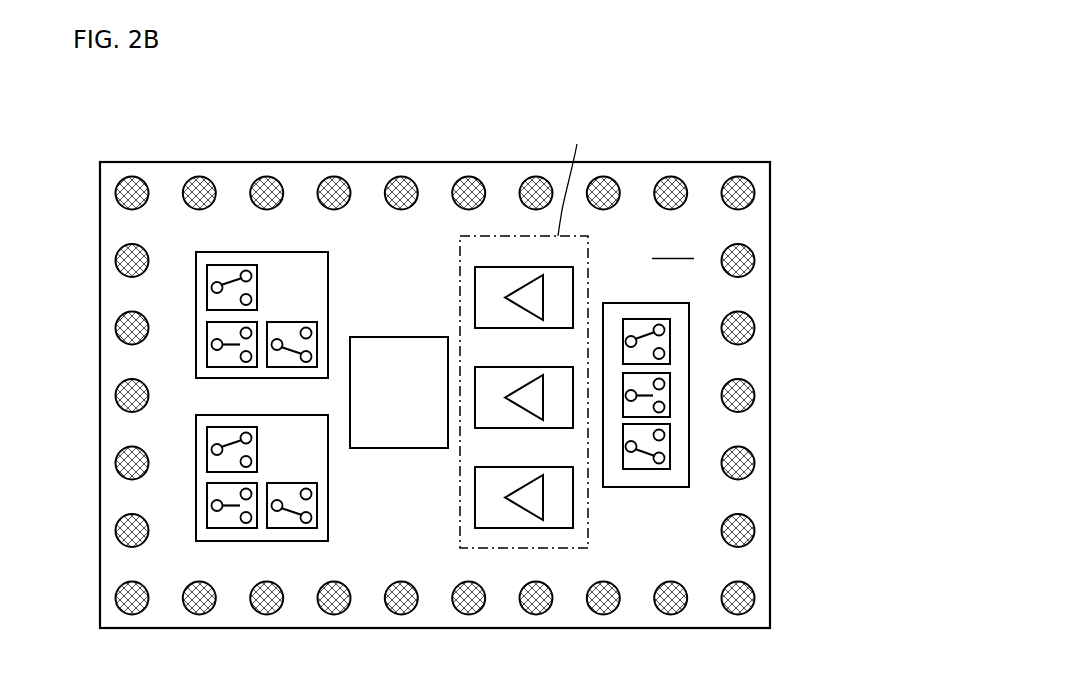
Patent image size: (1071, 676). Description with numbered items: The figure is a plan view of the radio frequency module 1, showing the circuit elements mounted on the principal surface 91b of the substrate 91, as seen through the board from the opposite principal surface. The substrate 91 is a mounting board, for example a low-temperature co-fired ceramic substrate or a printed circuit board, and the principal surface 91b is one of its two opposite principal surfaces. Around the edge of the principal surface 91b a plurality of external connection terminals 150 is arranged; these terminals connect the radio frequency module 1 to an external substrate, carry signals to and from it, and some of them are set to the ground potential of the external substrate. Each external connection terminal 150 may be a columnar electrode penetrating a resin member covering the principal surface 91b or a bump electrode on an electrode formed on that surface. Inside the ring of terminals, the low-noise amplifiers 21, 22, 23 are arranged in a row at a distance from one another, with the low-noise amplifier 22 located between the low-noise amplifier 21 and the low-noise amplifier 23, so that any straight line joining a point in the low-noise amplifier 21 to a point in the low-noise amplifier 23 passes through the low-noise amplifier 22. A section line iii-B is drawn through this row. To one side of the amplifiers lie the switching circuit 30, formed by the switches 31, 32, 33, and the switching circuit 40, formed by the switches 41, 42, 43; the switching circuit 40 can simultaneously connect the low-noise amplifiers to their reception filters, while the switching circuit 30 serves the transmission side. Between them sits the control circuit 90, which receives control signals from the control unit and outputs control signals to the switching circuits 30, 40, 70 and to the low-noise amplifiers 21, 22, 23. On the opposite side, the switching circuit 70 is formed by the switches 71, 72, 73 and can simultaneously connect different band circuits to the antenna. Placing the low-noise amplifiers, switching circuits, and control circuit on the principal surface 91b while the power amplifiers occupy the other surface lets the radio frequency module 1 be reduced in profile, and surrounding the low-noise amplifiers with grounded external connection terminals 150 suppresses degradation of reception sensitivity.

The radio frequency module 1 is at (715, 120).
The substrate 91 is at (436, 162).
The principal surface 91b is at (673, 248).
The external connection terminals 150 is at (270, 172).
The cross-section line iii-B is at (576, 177).
The switching circuit 30 is at (328, 263).
The switch 31 is at (232, 265).
The switch 32 is at (233, 367).
The switch 33 is at (296, 367).
The switching circuit 40 is at (328, 513).
The switch 41 is at (224, 427).
The switch 42 is at (233, 528).
The switch 43 is at (293, 528).
The control circuit 90 is at (400, 337).
The low-noise amplifier 21 is at (523, 285).
The low-noise amplifier 22 is at (523, 385).
The low-noise amplifier 23 is at (523, 485).
The switching circuit 70 is at (652, 487).
The switch 71 is at (670, 323).
The switch 72 is at (670, 378).
The switch 73 is at (670, 432).